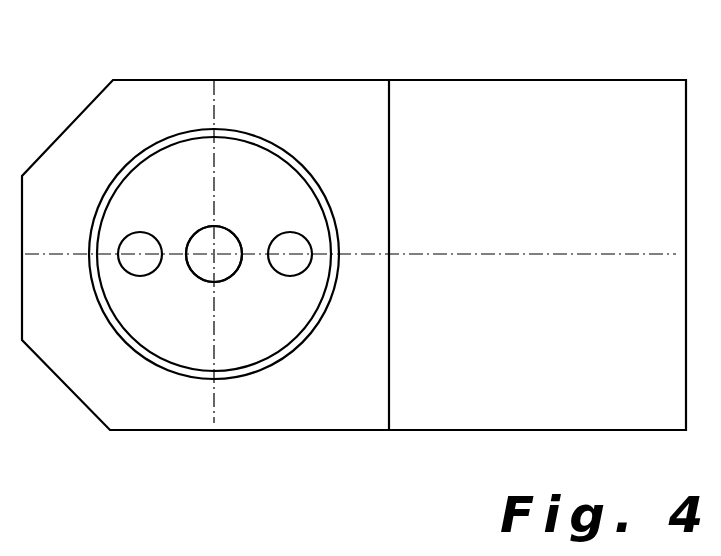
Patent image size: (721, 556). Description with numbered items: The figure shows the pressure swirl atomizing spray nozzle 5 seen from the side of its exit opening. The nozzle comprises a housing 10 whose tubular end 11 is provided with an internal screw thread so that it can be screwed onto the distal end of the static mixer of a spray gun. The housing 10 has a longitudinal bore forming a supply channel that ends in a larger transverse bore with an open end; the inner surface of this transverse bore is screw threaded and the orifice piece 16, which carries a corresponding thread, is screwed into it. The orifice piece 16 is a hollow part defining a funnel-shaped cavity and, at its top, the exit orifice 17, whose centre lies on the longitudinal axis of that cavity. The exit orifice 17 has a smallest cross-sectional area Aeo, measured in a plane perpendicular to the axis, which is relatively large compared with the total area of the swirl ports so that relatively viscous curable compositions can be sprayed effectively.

The spray nozzle 5 is at (354, 251).
The housing 10 is at (168, 400).
The tubular end 11 is at (600, 122).
The orifice piece 16 is at (257, 178).
The exit orifice 17 is at (203, 245).
The smallest cross-sectional area of the exit orifice Aeo is at (223, 265).